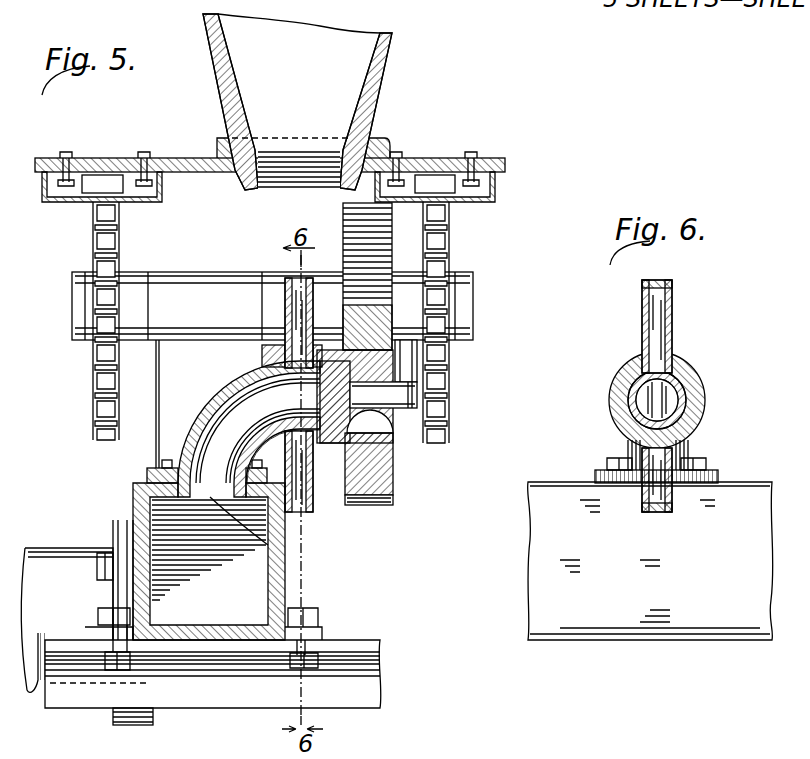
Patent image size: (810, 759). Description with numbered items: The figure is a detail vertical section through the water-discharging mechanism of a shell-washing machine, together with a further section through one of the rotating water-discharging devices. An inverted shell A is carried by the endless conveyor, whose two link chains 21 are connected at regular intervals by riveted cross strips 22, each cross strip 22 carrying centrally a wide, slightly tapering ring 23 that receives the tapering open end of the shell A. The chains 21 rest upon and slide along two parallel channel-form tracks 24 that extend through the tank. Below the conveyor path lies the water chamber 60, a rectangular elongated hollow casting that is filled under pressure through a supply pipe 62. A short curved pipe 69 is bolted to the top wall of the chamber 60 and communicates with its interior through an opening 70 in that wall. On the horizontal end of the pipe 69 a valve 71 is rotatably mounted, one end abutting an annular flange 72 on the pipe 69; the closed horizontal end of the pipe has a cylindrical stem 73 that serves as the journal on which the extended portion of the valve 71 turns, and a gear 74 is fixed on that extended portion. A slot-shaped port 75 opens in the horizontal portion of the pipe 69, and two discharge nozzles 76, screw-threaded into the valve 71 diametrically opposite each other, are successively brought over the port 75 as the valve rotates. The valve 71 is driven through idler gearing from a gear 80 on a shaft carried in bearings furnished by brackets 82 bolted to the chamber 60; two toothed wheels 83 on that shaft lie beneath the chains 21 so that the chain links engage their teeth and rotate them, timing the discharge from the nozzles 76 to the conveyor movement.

In FIG. 5, the shell A is at (380, 82).
In FIG. 5, the link chain 21 is at (104, 150).
In FIG. 5, the cross strip 22 is at (193, 158).
In FIG. 5, the ring 23 is at (380, 147).
In FIG. 5, the track 24 is at (162, 199).
In FIG. 5, the water chamber 60 is at (233, 627).
In FIG. 6, the water chamber 60 is at (530, 542).
In FIG. 5, the supply pipe 62 is at (27, 684).
In FIG. 5, the curved pipe 69 is at (240, 440).
In FIG. 6, the curved pipe 69 is at (686, 400).
In FIG. 5, the opening 70 is at (268, 542).
In FIG. 5, the valve 71 is at (325, 447).
In FIG. 6, the valve 71 is at (705, 382).
In FIG. 5, the annular flange 72 is at (272, 350).
In FIG. 5, the cylindrical stem 73 is at (418, 417).
In FIG. 5, the gear 74 is at (420, 502).
In FIG. 5, the port 75 is at (283, 434).
In FIG. 6, the port 75 is at (632, 392).
In FIG. 5, the discharge nozzle 76 is at (282, 282).
In FIG. 6, the discharge nozzle 76 is at (674, 313).
In FIG. 5, the gear 80 is at (348, 275).
In FIG. 5, the bracket 82 is at (157, 440).
In FIG. 5, the toothed wheel 83 is at (451, 248).